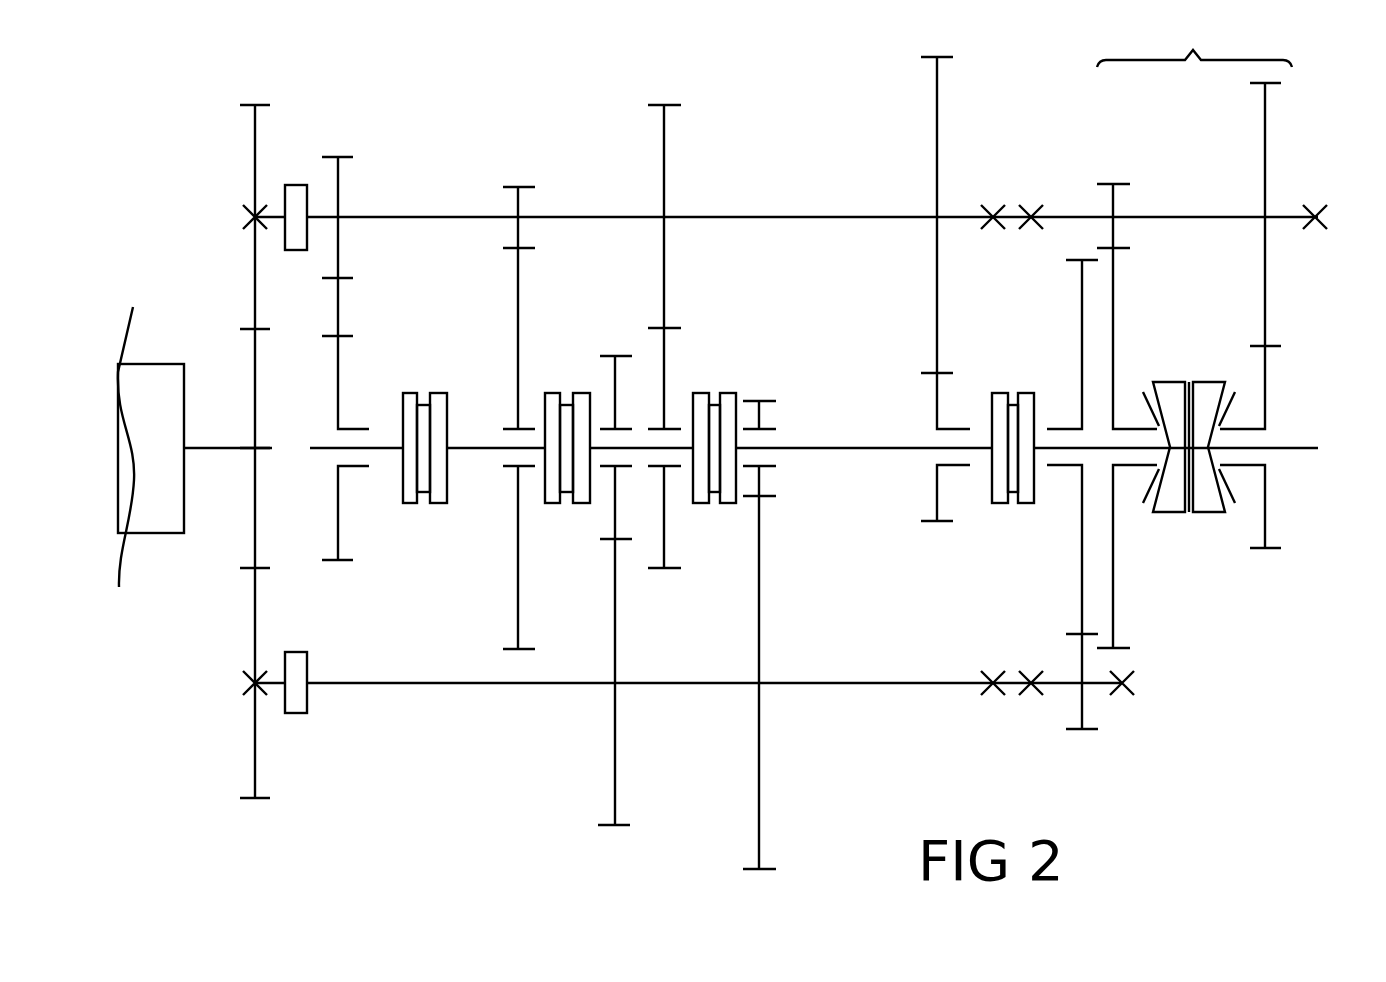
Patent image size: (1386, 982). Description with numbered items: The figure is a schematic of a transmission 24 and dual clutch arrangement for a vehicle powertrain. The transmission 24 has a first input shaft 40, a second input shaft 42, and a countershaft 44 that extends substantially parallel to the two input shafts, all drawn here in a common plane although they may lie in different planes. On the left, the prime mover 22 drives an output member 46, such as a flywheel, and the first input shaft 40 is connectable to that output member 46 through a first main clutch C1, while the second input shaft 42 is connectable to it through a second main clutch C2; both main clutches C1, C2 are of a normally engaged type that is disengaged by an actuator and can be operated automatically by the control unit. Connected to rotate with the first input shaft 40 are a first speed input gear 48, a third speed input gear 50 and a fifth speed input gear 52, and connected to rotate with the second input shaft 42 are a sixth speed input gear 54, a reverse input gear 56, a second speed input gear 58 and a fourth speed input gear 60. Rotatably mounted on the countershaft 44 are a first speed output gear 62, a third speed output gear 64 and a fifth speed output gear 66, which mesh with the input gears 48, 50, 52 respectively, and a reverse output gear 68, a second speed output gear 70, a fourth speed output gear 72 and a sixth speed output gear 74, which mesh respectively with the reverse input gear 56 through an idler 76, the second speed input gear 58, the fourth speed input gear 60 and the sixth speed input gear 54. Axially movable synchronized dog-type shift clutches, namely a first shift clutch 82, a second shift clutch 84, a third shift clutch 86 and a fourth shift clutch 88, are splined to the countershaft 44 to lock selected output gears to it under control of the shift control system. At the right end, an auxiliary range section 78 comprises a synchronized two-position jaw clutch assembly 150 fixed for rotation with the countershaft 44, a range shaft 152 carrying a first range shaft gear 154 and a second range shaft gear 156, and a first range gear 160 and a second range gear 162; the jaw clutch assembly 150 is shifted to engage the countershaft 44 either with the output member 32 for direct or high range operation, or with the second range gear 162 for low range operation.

The prime mover 22 is at (152, 533).
The transmission 24 is at (465, 797).
The output member 32 is at (1285, 447).
The first input shaft 40 is at (803, 217).
The second input shaft 42 is at (960, 682).
The countershaft 44 is at (840, 447).
The output member 46 is at (255, 363).
The first speed input gear 48 is at (518, 203).
The third speed input gear 50 is at (664, 186).
The fifth speed input gear 52 is at (937, 120).
The sixth speed input gear 54 is at (760, 771).
The reverse input gear 56 is at (338, 185).
The second speed input gear 58 is at (1184, 682).
The fourth speed input gear 60 is at (615, 737).
The first speed output gear 62 is at (518, 331).
The third speed output gear 64 is at (664, 343).
The fifth speed output gear 66 is at (937, 480).
The reverse output gear 68 is at (338, 383).
The second speed output gear 70 is at (1082, 545).
The fourth speed output gear 72 is at (615, 512).
The sixth speed output gear 74 is at (762, 478).
The idler 76 is at (338, 308).
The range section 78 is at (1194, 44).
The first shift clutch 82 is at (410, 503).
The second shift clutch 84 is at (580, 503).
The third shift clutch 86 is at (703, 380).
The fourth shift clutch 88 is at (1000, 392).
The jaw clutch assembly 150 is at (1205, 382).
The range shaft 152 is at (1167, 217).
The first range shaft gear 154 is at (1265, 147).
The second range shaft gear 156 is at (1113, 200).
The first range gear 160 is at (1265, 375).
The second range gear 162 is at (1113, 298).
The first main clutch C1 is at (295, 185).
The second main clutch C2 is at (297, 713).